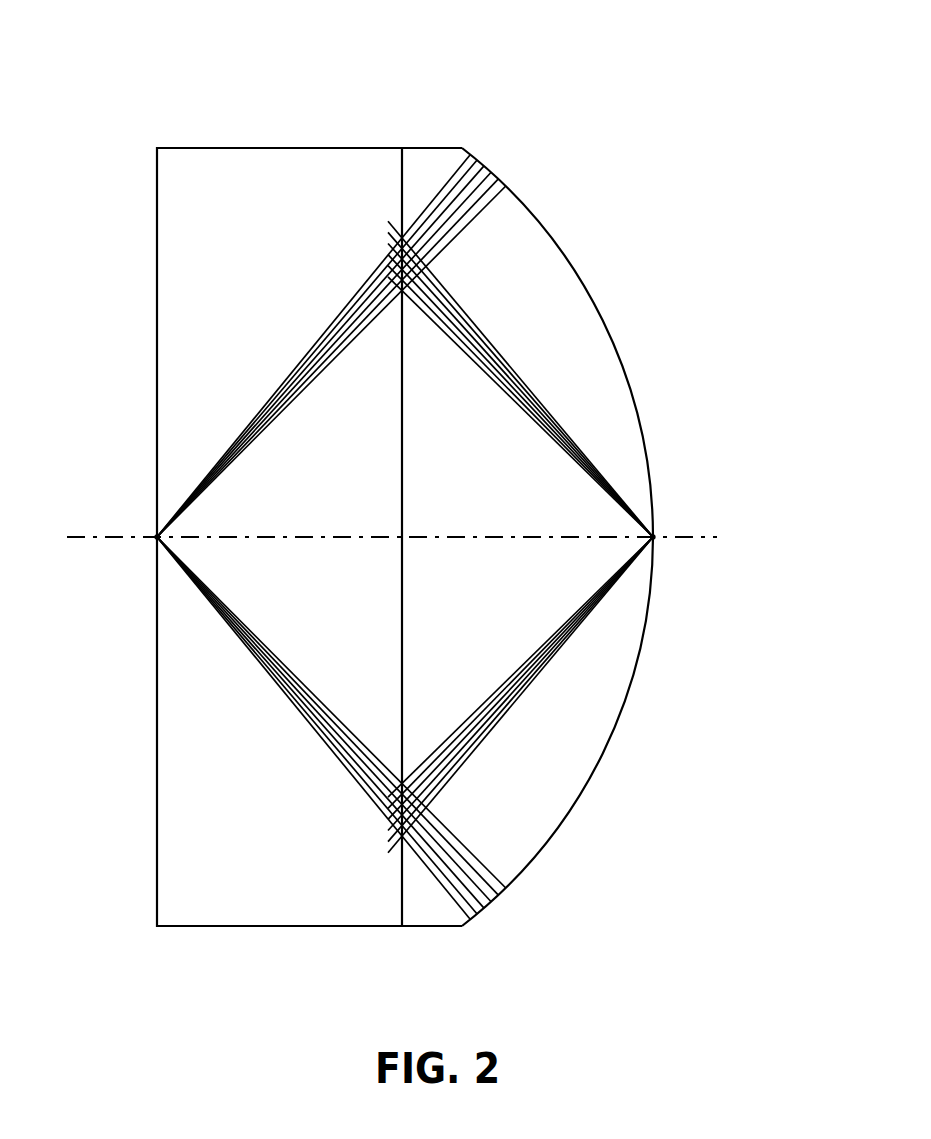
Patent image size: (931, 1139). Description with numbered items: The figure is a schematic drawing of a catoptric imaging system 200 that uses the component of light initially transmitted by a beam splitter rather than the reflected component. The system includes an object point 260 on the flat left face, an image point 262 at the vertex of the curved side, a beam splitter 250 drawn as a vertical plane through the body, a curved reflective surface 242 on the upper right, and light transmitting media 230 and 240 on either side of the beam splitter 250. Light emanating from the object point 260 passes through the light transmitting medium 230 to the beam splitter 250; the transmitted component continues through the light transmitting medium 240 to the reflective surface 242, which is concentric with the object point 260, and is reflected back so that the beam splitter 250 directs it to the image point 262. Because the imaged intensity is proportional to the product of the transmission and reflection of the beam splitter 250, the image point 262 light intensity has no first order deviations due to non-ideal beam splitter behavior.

The catoptric imaging system 200 is at (536, 93).
The light transmitting medium 230 is at (176, 341).
The light transmitting medium 240 is at (575, 758).
The curved reflective surface 242 is at (598, 314).
The beam splitter 250 is at (402, 633).
The object point 260 is at (156, 535).
The image point 262 is at (655, 539).